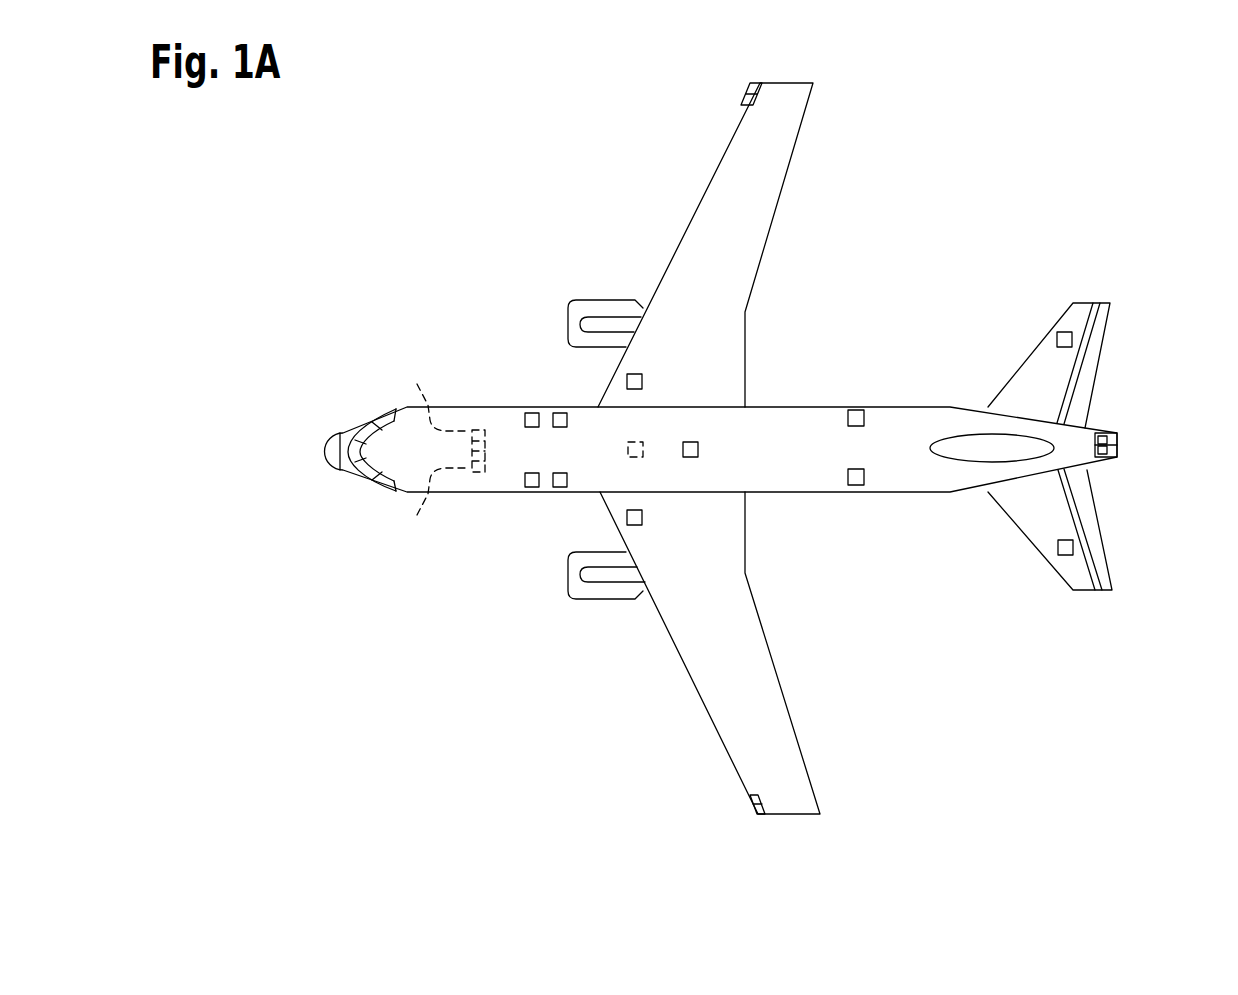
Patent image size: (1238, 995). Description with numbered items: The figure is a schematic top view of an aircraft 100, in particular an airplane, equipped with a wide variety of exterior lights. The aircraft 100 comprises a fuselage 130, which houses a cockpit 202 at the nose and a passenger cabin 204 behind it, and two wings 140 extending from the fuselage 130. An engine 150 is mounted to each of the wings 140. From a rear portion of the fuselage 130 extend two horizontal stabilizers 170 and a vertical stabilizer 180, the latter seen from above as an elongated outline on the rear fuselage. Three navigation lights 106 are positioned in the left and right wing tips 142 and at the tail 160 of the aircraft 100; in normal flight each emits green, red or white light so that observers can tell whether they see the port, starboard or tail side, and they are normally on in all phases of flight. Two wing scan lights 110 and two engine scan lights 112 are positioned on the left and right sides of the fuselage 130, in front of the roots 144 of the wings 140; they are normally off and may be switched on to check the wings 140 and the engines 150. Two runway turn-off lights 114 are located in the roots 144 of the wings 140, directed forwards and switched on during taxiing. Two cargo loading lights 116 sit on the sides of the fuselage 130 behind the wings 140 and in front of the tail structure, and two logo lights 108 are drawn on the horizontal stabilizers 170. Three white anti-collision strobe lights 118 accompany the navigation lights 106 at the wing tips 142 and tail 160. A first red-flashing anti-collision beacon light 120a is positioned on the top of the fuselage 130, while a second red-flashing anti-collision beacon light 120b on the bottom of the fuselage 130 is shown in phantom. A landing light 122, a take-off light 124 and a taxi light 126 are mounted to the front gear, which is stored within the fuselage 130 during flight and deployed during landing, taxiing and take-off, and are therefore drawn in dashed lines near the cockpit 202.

The aircraft 100 is at (721, 350).
The navigation lights 106 is at (752, 88).
The logo lights 108 is at (1057, 339).
The wing scan lights 110 is at (524, 420).
The engine scan lights 112 is at (558, 413).
The runway turn-off lights 114 is at (643, 381).
The cargo loading lights 116 is at (857, 410).
The white anti-collision strobe lights 118 is at (745, 102).
The first red-flashing anti-collision beacon light 120a is at (694, 455).
The second red-flashing anti-collision beacon light 120b is at (641, 441).
The landing light 122 is at (432, 511).
The take-off light 124 is at (432, 391).
The taxi light 126 is at (472, 450).
The fuselage 130 is at (922, 478).
The wings 140 is at (800, 180).
The wing tips 142 is at (800, 76).
The roots 144 is at (597, 384).
The engine 150 is at (598, 296).
The tail 160 is at (1100, 462).
The horizontal stabilizers 170 is at (1135, 316).
The vertical stabilizer 180 is at (957, 447).
The cockpit 202 is at (354, 418).
The passenger cabin 204 is at (817, 427).